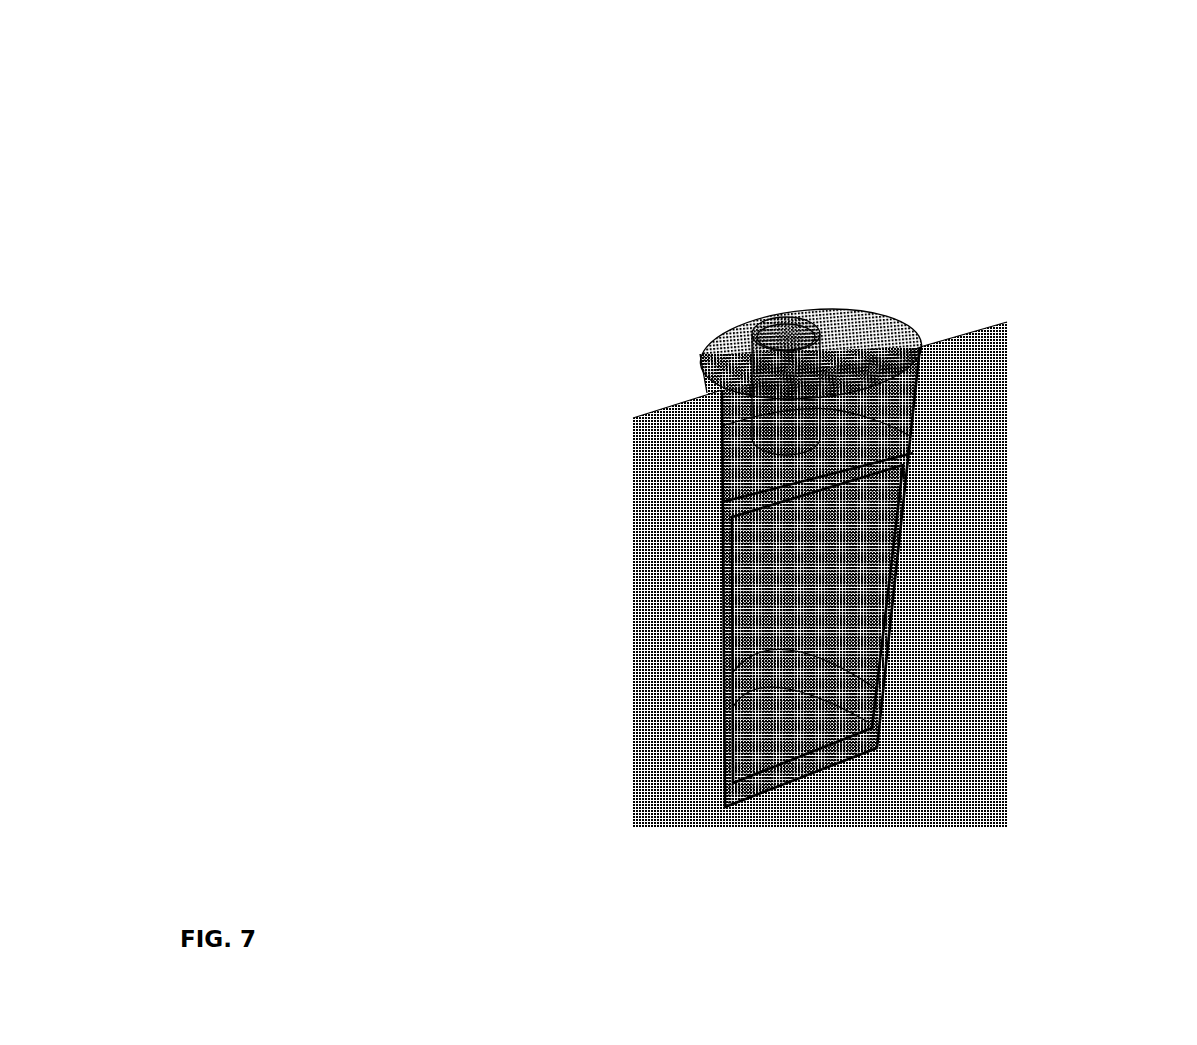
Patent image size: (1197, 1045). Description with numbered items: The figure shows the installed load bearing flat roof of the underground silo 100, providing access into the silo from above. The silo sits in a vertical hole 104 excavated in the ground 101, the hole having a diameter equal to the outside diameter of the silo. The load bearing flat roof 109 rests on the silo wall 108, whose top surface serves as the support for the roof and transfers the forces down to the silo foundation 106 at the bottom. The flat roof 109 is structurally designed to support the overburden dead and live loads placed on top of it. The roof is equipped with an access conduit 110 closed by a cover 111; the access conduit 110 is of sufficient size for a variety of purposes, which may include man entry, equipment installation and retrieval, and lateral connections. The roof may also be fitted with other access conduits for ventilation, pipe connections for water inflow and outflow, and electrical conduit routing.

The underground silo 100 is at (266, 122).
The ground 101 is at (643, 603).
The vertical hole 104 is at (863, 362).
The silo foundation 106 is at (820, 763).
The silo wall 108 is at (897, 587).
The load bearing flat roof 109 is at (853, 453).
The access conduit 110 is at (760, 378).
The cover 111 is at (775, 342).